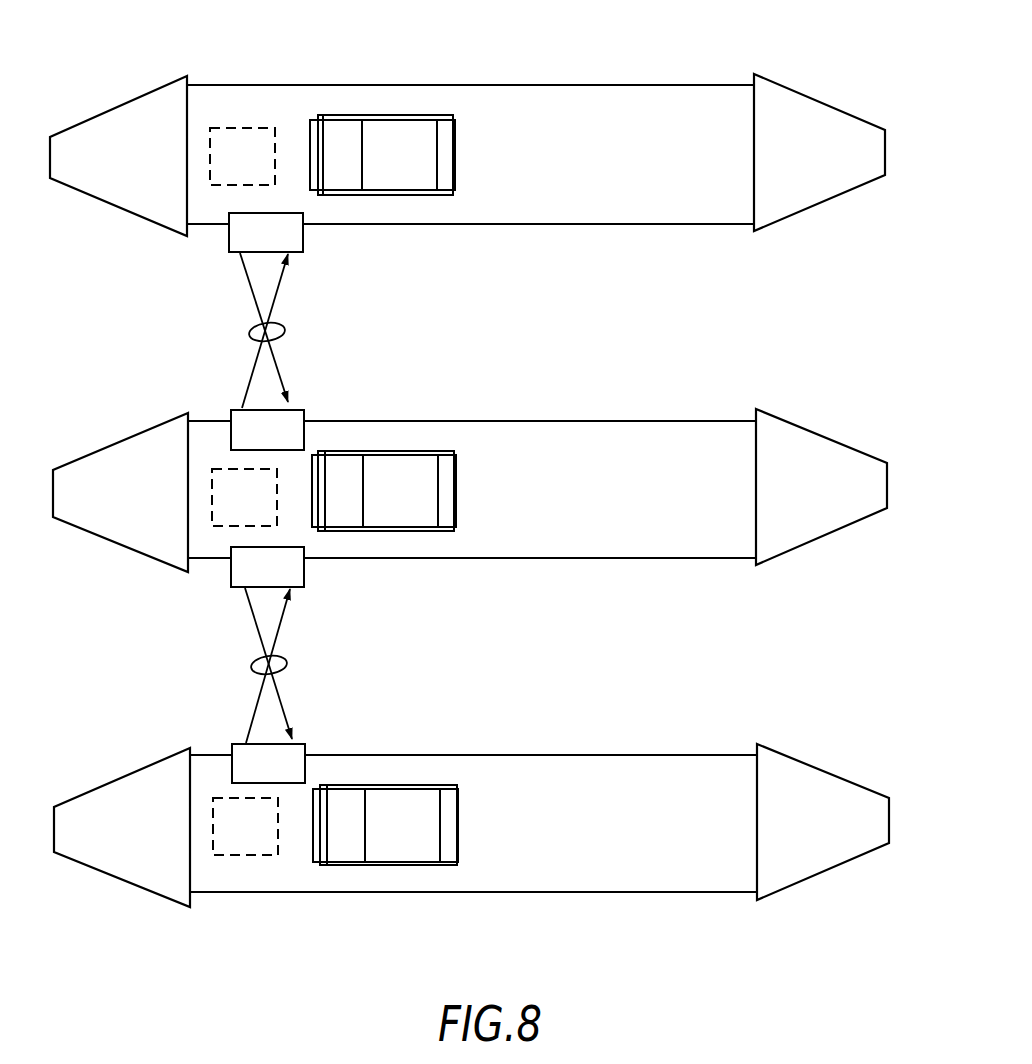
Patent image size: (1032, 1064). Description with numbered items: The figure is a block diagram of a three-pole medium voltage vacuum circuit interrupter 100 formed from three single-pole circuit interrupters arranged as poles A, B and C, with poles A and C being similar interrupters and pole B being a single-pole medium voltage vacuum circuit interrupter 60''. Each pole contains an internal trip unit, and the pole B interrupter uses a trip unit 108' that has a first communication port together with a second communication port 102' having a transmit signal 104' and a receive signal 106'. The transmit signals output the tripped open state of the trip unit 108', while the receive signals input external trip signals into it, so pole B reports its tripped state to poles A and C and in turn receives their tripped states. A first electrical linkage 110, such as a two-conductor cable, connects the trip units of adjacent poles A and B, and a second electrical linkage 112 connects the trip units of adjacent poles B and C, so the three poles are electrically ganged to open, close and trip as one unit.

The three-pole medium voltage vacuum circuit interrupter 100 is at (514, 54).
The single-pole medium voltage vacuum circuit interrupter 60'' is at (470, 510).
The second communication port 102' is at (308, 575).
The transmit signal 104' is at (239, 663).
The receive signal 106' is at (298, 666).
The trip unit 108' is at (196, 499).
The first electrical linkage 110 is at (249, 333).
The second electrical linkage 112 is at (251, 666).